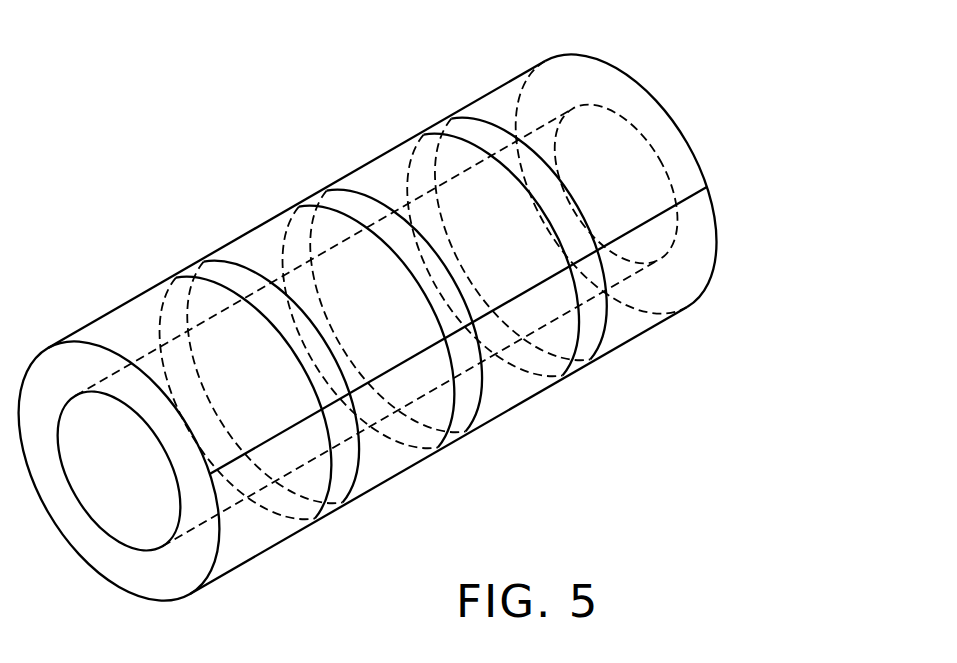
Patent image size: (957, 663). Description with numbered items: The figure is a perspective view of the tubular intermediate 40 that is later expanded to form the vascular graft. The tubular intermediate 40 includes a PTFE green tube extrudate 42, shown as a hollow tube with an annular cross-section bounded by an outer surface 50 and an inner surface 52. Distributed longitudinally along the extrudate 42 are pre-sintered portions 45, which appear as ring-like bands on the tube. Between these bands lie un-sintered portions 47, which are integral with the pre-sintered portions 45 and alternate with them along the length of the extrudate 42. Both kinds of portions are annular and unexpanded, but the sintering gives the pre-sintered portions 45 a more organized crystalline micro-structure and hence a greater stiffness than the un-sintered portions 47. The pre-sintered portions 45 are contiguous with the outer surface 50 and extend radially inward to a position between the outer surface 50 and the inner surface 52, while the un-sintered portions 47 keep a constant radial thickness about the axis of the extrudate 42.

The tubular intermediate 40 is at (210, 118).
The PTFE green tube extrudate 42 is at (592, 56).
The pre-sintered portions 45 is at (205, 268).
The un-sintered portions 47 is at (247, 240).
The outer surface 50 is at (229, 552).
The inner surface 52 is at (110, 510).